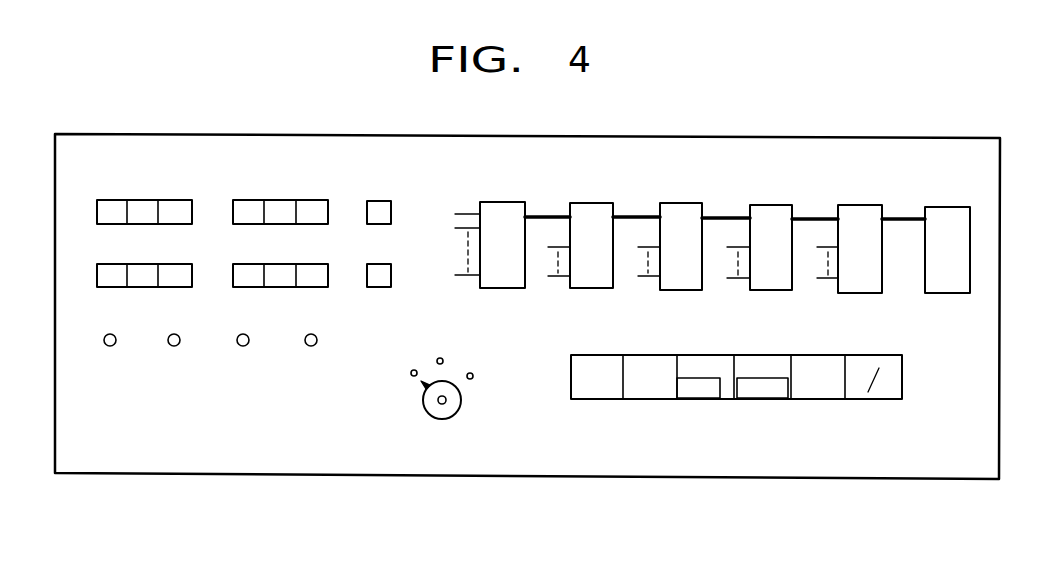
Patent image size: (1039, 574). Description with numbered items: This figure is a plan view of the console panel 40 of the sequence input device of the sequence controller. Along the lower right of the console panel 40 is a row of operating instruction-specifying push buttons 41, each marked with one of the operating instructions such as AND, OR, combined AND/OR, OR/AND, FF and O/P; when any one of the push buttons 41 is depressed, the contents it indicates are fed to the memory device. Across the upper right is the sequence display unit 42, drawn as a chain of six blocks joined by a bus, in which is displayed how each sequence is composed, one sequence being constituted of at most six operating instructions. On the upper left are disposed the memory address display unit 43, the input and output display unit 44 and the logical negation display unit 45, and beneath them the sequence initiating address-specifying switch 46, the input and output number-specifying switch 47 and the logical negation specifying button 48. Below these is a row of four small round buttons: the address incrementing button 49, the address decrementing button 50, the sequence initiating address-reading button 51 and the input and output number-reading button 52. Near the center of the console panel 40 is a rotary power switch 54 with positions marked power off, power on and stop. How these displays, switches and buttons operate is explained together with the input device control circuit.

The console panel 40 is at (530, 477).
The operating instruction-specifying push buttons 41 is at (761, 402).
The sequence display unit 42 is at (670, 202).
The memory address display unit 43 is at (145, 198).
The input and output display unit 44 is at (281, 198).
The logical negation display unit 45 is at (381, 199).
The sequence initiating address-specifying switch 46 is at (145, 263).
The input and output number-specifying switch 47 is at (281, 263).
The logical negation specifying button 48 is at (381, 263).
The address incrementing button 49 is at (110, 333).
The address decrementing button 50 is at (174, 333).
The sequence initiating address-reading button 51 is at (243, 333).
The input and output number-reading button 52 is at (311, 333).
The power switch 54 is at (459, 413).